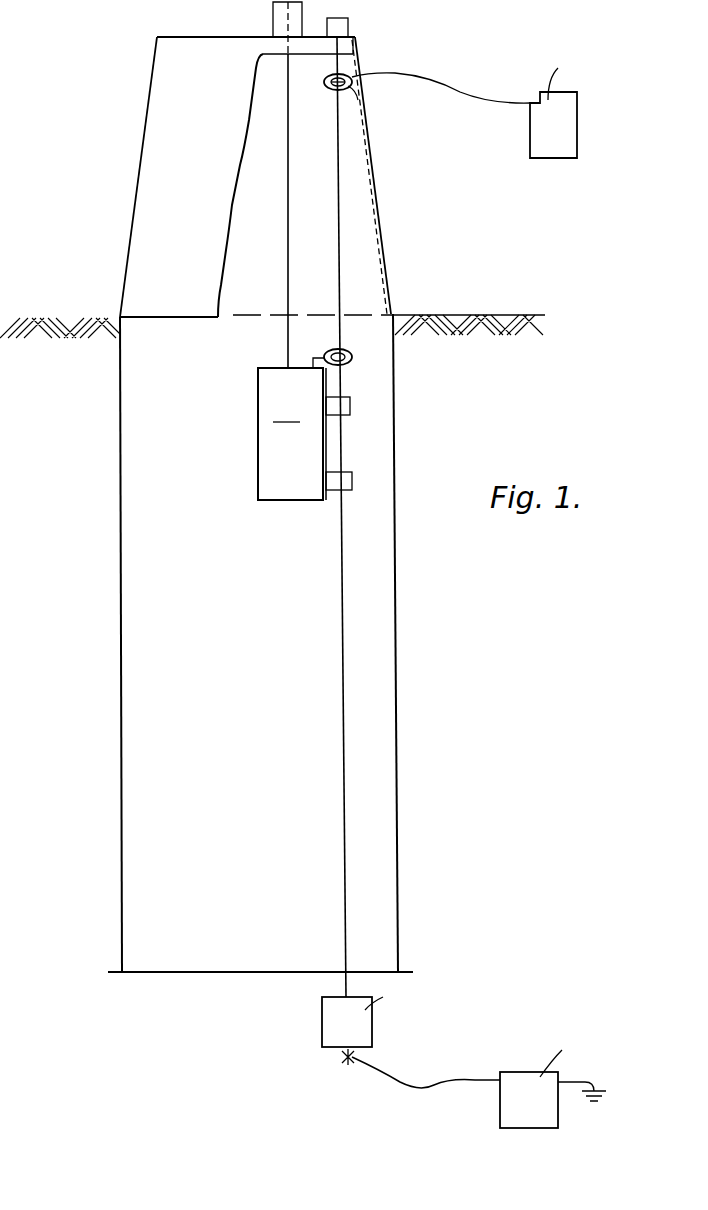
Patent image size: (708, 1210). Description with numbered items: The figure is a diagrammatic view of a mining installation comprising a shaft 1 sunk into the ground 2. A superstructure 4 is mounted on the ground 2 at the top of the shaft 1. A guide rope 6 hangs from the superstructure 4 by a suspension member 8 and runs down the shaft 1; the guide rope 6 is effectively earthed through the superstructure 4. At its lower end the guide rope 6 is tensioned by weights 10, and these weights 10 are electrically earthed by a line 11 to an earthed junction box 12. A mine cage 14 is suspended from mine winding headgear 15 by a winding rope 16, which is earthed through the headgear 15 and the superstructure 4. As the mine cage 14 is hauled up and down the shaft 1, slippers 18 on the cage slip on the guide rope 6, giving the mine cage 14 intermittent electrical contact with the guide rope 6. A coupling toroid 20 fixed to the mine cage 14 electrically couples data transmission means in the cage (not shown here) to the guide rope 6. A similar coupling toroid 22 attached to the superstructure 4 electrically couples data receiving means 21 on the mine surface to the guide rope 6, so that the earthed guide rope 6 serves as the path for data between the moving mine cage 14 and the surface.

The shaft 1 is at (258, 644).
The ground 2 is at (72, 631).
The superstructure 4 is at (138, 192).
The guide rope 6 is at (340, 164).
The suspension member 8 is at (348, 28).
The weights 10 is at (338, 1020).
The line 11 is at (434, 1085).
The junction box 12 is at (515, 1112).
The mine cage 14 is at (292, 434).
The mine winding headgear 15 is at (278, 15).
The winding rope 16 is at (288, 222).
The slippers 18 is at (334, 480).
The coupling toroid 20 is at (348, 364).
The data receiving means 21 is at (553, 148).
The coupling toroid 22 is at (363, 110).